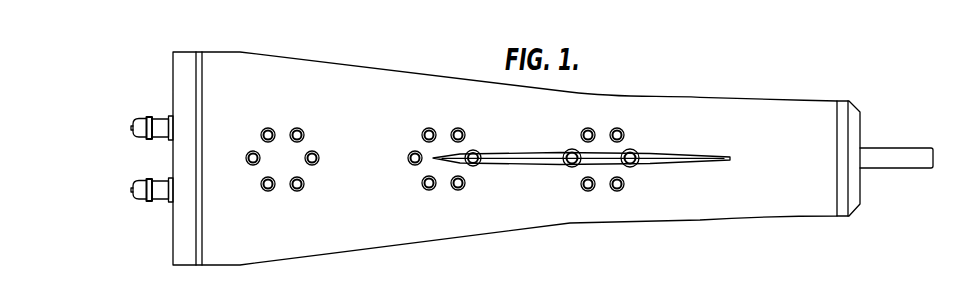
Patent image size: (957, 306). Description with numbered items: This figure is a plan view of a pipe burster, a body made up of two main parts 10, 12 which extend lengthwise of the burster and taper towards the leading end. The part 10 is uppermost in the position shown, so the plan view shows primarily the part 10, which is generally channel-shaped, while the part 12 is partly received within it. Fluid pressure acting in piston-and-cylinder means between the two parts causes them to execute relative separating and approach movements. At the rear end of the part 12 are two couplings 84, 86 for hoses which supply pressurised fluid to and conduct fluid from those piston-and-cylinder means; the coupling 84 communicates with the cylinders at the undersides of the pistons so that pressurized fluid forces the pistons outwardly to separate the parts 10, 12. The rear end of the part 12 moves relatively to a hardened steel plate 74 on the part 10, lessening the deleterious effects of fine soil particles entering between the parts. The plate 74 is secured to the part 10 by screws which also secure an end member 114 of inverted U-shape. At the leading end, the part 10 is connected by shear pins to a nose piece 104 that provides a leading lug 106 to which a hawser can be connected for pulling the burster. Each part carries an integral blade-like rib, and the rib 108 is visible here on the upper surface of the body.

The part 10 is at (388, 78).
The part 12 is at (270, 243).
The hardened steel plate 74 is at (200, 243).
The coupling 84 is at (139, 196).
The coupling 86 is at (141, 121).
The nose piece 104 is at (842, 108).
The leading lug 106 is at (885, 147).
The blade-like rib 108 is at (668, 155).
The end member 114 is at (182, 228).